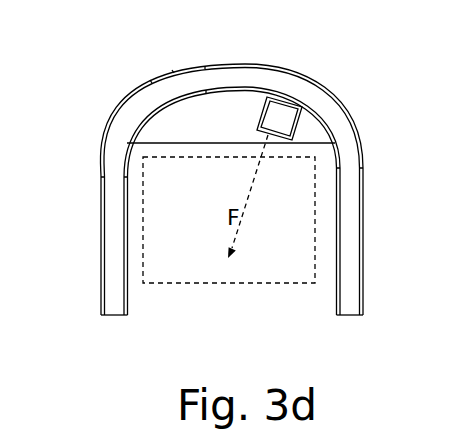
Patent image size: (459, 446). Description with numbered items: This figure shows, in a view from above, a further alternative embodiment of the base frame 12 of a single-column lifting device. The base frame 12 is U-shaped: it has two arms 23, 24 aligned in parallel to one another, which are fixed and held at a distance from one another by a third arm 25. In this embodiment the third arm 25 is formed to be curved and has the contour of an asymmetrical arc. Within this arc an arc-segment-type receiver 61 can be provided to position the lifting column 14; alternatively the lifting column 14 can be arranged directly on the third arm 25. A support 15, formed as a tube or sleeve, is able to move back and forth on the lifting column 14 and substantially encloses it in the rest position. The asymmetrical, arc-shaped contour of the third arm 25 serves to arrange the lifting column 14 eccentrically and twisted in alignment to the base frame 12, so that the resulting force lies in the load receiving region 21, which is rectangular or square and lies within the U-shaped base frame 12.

The base frame 12 is at (376, 180).
The arm 23 is at (100, 270).
The arm 24 is at (363, 233).
The third arm 25 is at (192, 88).
The arc-segment-type receiver 61 is at (222, 120).
The lifting column 14 is at (275, 117).
The support 15 is at (290, 123).
The load receiving region 21 is at (200, 283).